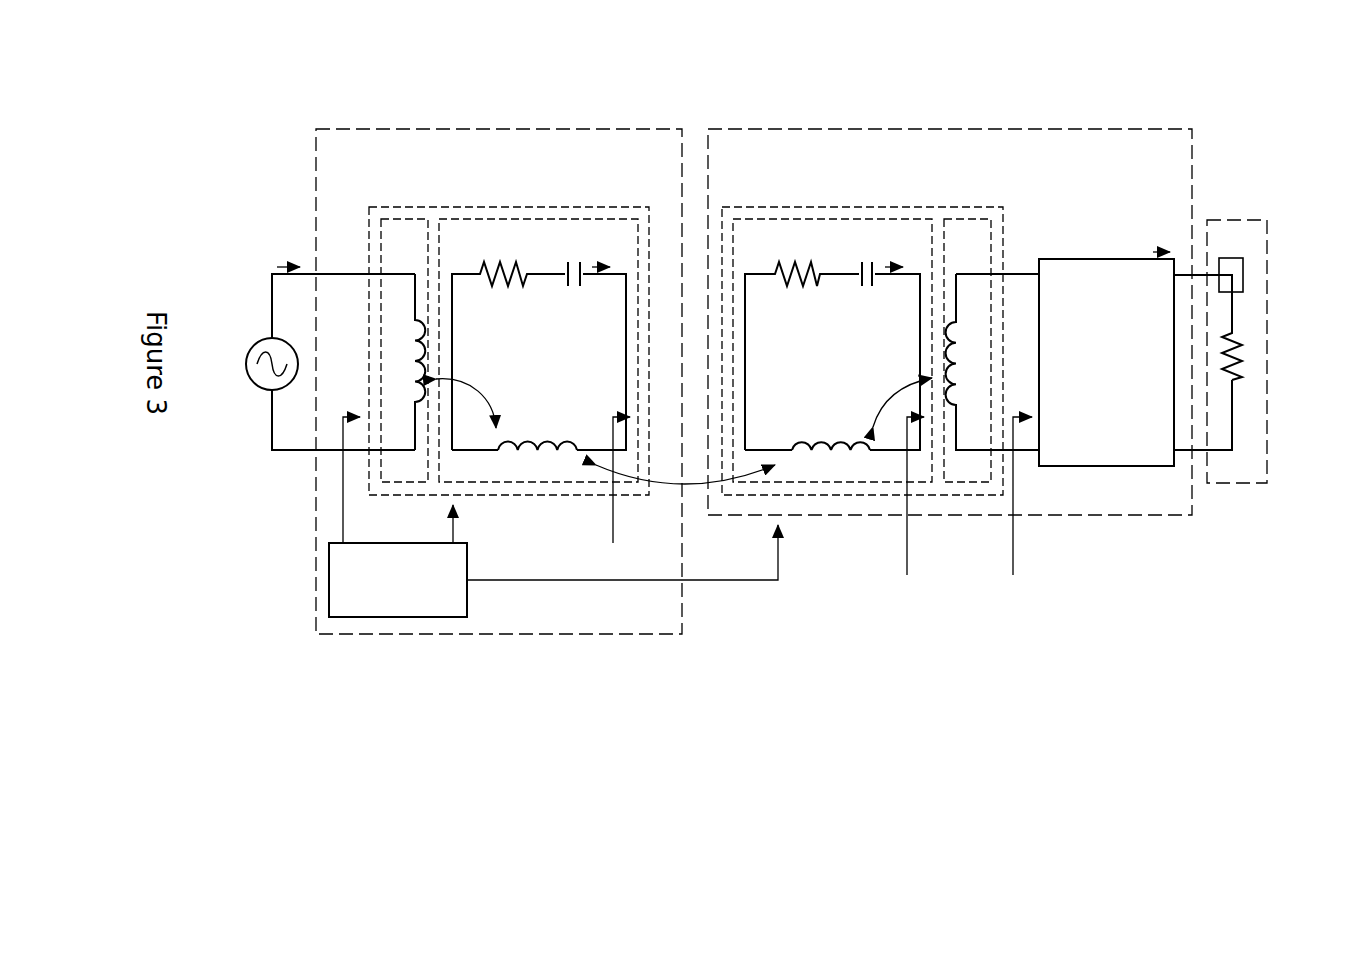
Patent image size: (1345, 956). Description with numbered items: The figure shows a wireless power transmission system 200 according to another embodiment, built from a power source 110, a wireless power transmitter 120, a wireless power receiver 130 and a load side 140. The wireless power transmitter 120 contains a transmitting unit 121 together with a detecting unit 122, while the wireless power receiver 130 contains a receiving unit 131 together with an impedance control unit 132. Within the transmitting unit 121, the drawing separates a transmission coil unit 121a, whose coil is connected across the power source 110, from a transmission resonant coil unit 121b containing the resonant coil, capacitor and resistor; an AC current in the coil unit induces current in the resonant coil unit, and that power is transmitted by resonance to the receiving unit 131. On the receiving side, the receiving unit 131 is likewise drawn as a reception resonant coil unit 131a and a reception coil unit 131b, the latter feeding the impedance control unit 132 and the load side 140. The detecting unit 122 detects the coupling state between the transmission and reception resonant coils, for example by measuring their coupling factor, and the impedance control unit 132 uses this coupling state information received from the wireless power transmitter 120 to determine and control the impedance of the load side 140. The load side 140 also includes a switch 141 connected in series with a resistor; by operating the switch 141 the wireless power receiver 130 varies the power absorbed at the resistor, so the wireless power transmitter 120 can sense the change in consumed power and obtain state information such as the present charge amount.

The wireless power transmission system 200 is at (301, 70).
The power source 110 is at (253, 346).
The wireless power transmitter 120 is at (493, 129).
The transmitting unit 121 is at (495, 207).
The source coil L1 121a is at (416, 219).
The transmission resonance circuit 121b is at (567, 219).
The detecting unit 122 is at (395, 617).
The wireless power receiver 130 is at (960, 129).
The receiving unit 131 is at (873, 207).
The reception resonance circuit 131a is at (784, 219).
The load coil L4 131b is at (968, 219).
The impedance control unit 132 is at (1090, 259).
The load side 140 is at (1239, 220).
The switch 141 is at (1243, 273).